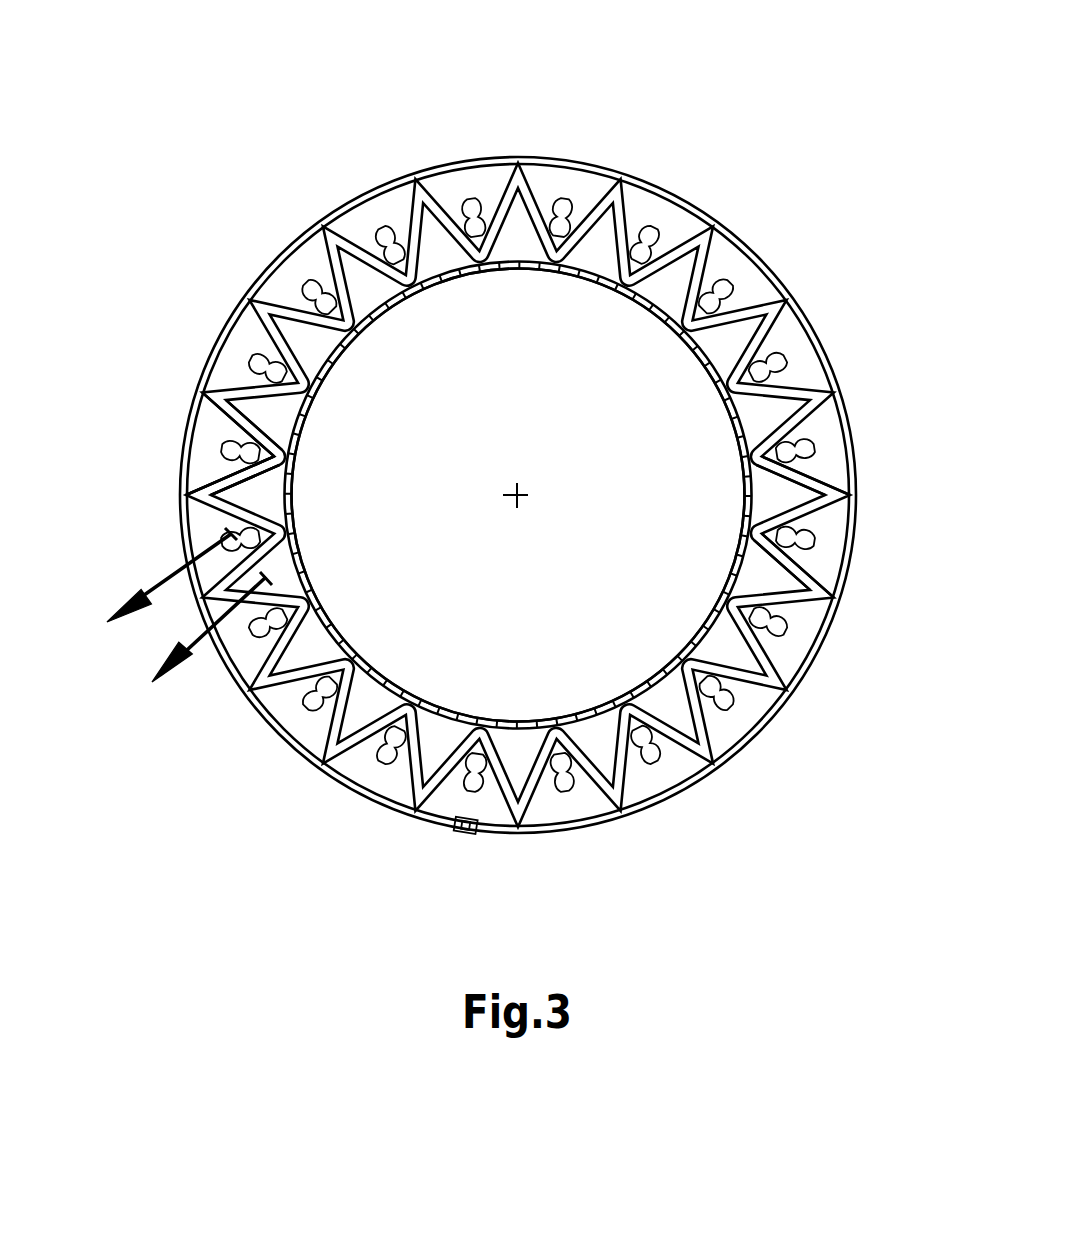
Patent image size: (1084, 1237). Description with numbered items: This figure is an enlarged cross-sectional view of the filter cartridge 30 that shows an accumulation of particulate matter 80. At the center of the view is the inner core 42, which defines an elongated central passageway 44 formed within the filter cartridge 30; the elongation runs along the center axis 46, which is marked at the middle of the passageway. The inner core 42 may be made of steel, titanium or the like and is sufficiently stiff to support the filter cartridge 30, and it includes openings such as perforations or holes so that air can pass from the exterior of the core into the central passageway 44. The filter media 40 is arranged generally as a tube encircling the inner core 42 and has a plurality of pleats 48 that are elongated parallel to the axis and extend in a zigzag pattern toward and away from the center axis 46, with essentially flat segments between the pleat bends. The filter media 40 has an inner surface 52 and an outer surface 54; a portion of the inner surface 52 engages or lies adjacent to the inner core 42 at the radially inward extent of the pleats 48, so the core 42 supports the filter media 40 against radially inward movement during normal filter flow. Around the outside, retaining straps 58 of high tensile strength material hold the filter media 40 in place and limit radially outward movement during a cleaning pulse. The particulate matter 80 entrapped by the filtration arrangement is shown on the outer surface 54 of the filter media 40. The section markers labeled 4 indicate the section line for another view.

The filter cartridge 30 is at (278, 100).
The filter media 40 is at (245, 382).
The inner core 42 is at (468, 268).
The central passageway 44 is at (535, 604).
The center axis 46 is at (523, 492).
The pleats 48 is at (807, 567).
The inner surface 52 is at (258, 468).
The outer surface 54 is at (228, 468).
The retaining straps 58 is at (747, 742).
The particulate matter 80 is at (641, 218).
The section line 4- 4 is at (168, 625).